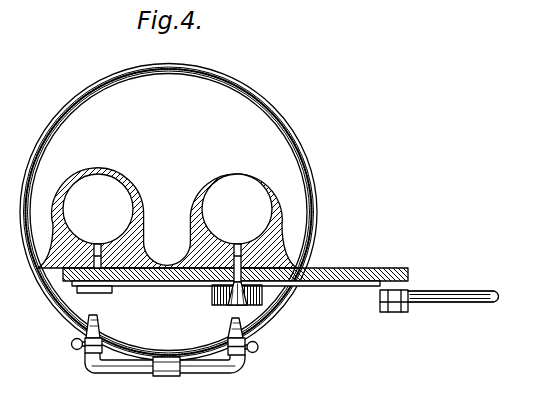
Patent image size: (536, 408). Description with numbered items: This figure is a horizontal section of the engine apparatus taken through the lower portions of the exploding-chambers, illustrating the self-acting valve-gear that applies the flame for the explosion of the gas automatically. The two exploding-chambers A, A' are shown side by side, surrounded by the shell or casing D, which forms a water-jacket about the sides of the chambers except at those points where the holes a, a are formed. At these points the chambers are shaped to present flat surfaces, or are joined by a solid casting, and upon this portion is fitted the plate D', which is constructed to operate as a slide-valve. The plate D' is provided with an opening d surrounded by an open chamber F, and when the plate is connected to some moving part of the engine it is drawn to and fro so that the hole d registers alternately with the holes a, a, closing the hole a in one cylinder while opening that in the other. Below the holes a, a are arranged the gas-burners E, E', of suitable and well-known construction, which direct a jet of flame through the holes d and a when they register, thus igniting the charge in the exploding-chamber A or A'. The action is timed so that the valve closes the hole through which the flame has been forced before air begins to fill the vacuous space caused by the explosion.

The exploding-chamber A is at (167, 218).
The exploding-chamber A' is at (237, 209).
The hole a is at (166, 256).
The shell or casing D is at (168, 212).
The plate D' is at (281, 280).
The opening d is at (237, 305).
The gas-burner E is at (96, 334).
The gas-burner E' is at (255, 336).
The open chamber F is at (263, 302).